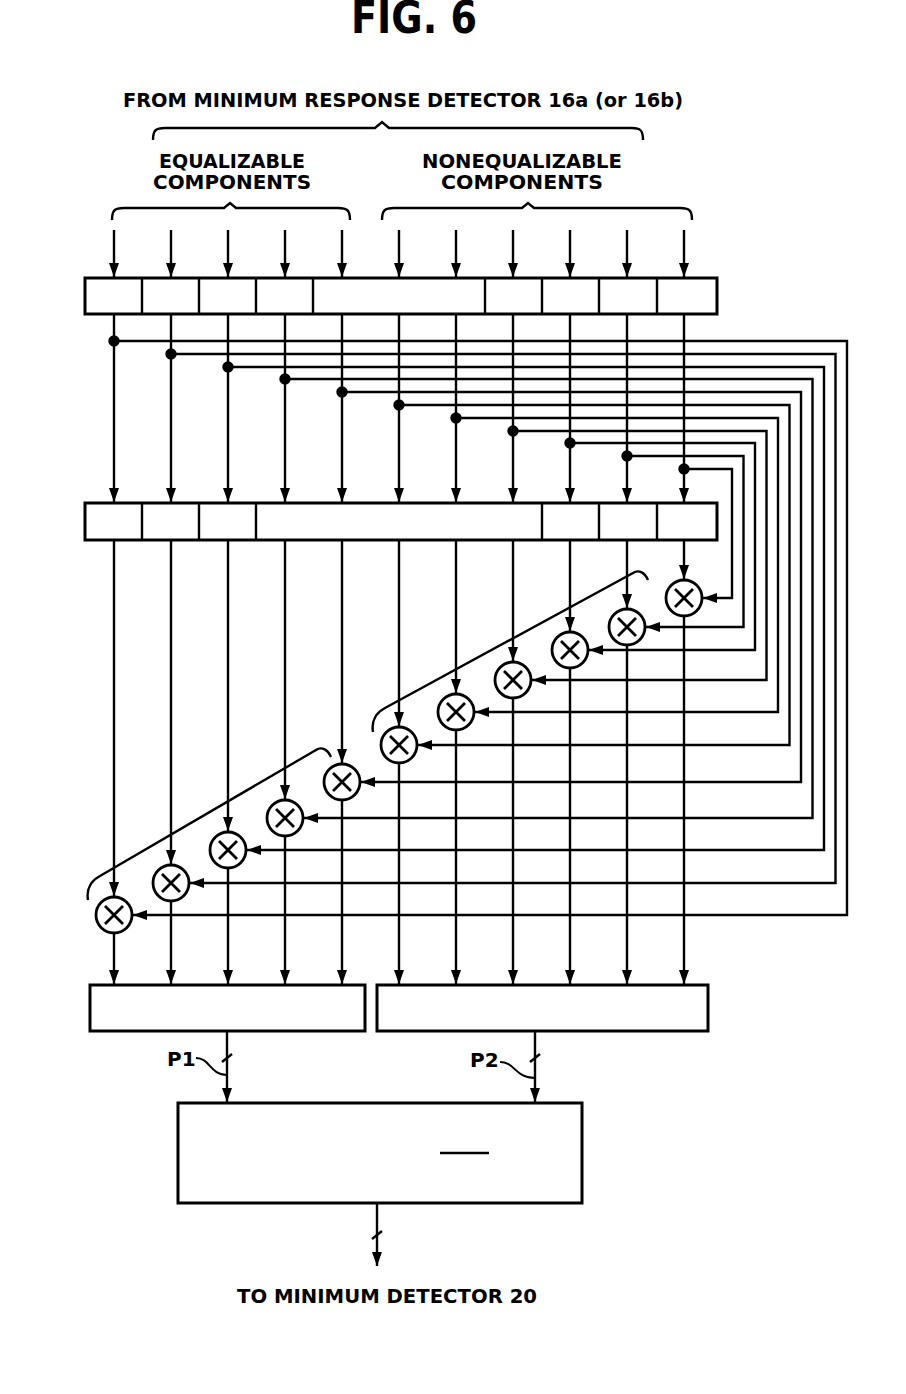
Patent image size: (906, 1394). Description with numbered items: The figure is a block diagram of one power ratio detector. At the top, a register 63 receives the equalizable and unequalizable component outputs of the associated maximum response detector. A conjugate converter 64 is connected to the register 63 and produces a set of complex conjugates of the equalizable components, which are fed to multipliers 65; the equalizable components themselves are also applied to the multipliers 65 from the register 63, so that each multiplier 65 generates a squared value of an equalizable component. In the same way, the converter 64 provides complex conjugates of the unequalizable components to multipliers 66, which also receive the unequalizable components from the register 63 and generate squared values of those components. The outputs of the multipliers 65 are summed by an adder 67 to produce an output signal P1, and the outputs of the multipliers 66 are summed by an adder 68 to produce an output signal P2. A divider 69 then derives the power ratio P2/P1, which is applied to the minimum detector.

The register 63 is at (85, 295).
The conjugate converter 64 is at (85, 520).
The multipliers 65 is at (224, 840).
The multipliers 66 is at (537, 667).
The adder 67 is at (90, 1010).
The adder 68 is at (708, 1010).
The divider 69 is at (178, 1143).